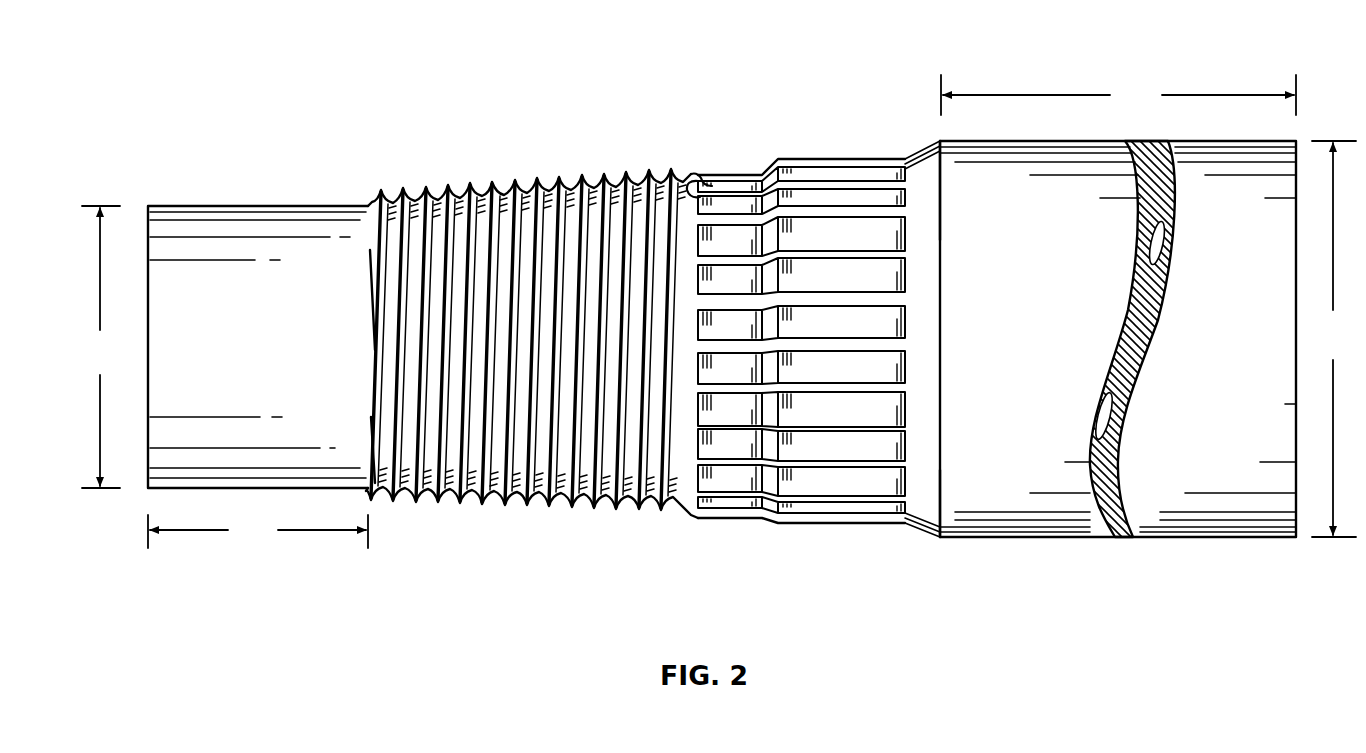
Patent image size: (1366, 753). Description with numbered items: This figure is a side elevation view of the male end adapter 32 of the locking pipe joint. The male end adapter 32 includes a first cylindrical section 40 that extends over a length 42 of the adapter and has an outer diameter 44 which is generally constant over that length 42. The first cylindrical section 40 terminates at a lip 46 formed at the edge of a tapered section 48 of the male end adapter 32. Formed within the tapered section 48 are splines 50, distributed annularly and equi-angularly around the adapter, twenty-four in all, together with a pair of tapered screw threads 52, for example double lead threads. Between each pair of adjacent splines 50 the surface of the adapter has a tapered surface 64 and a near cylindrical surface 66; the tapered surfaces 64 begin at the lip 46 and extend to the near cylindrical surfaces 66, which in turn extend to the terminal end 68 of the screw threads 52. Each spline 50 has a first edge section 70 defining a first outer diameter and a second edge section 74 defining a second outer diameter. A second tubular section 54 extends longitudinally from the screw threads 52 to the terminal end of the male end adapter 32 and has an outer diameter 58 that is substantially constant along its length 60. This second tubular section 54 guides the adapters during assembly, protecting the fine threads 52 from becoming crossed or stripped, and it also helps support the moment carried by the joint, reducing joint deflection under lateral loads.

The male end adapter 32 is at (370, 102).
The first cylindrical section 40 is at (1045, 517).
The length 42 is at (1118, 95).
The outer diameter 44 is at (1334, 339).
The lip 46 is at (940, 228).
The tapered section 48 is at (598, 131).
The splines 50 is at (842, 200).
The tapered screw threads 52 is at (470, 182).
The second tubular section 54 is at (220, 230).
The outer diameter 58 is at (101, 347).
The length 60 is at (258, 531).
The tapered surface 64 is at (900, 296).
The near cylindrical surface 66 is at (745, 348).
The terminal end of the screw threads 68 is at (690, 180).
The first edge section 70 is at (820, 510).
The second edge section 74 is at (718, 483).